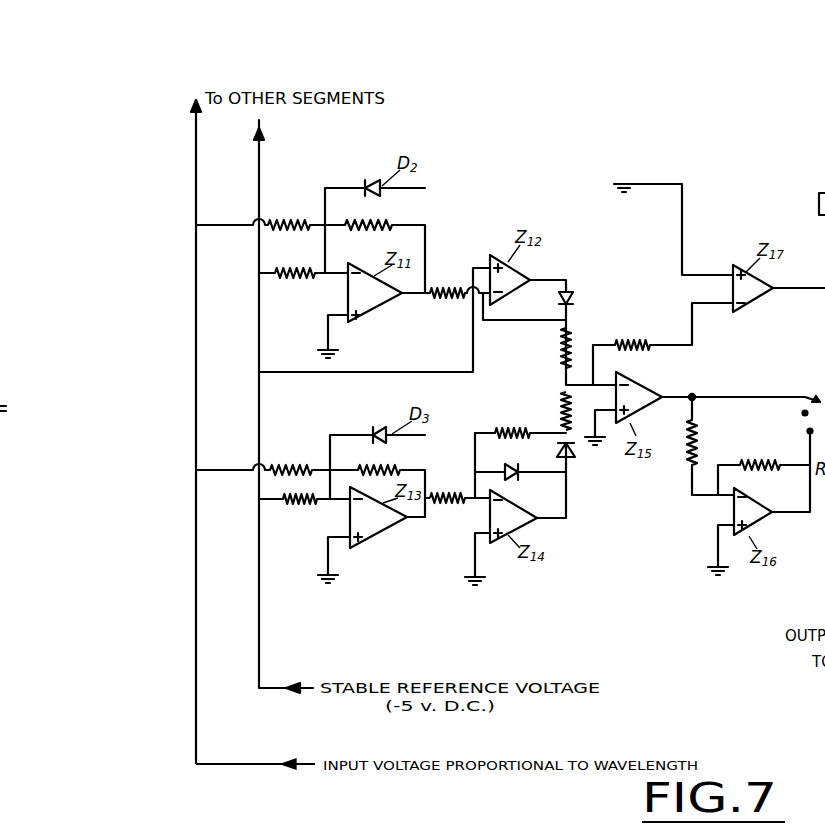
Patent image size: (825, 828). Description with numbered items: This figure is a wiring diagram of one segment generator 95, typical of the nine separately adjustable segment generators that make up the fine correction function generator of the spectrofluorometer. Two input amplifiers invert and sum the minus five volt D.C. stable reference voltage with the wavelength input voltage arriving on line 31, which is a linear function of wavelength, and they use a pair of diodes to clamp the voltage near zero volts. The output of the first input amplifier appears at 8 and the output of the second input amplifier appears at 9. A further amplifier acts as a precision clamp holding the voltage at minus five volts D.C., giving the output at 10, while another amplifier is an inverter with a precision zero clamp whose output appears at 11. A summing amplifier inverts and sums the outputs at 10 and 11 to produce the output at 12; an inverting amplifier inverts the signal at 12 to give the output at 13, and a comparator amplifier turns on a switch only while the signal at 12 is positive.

The output of amplifier Z11 8 is at (427, 288).
The output of amplifier Z13 9 is at (427, 497).
The output of amplifier Z12 10 is at (571, 320).
The output of amplifier Z14 11 is at (563, 427).
The output of amplifier Z15 12 is at (697, 395).
The output of amplifier Z16 13 is at (790, 513).
The wavelength input voltage line 31 is at (232, 763).
The segment generator 95 is at (588, 143).